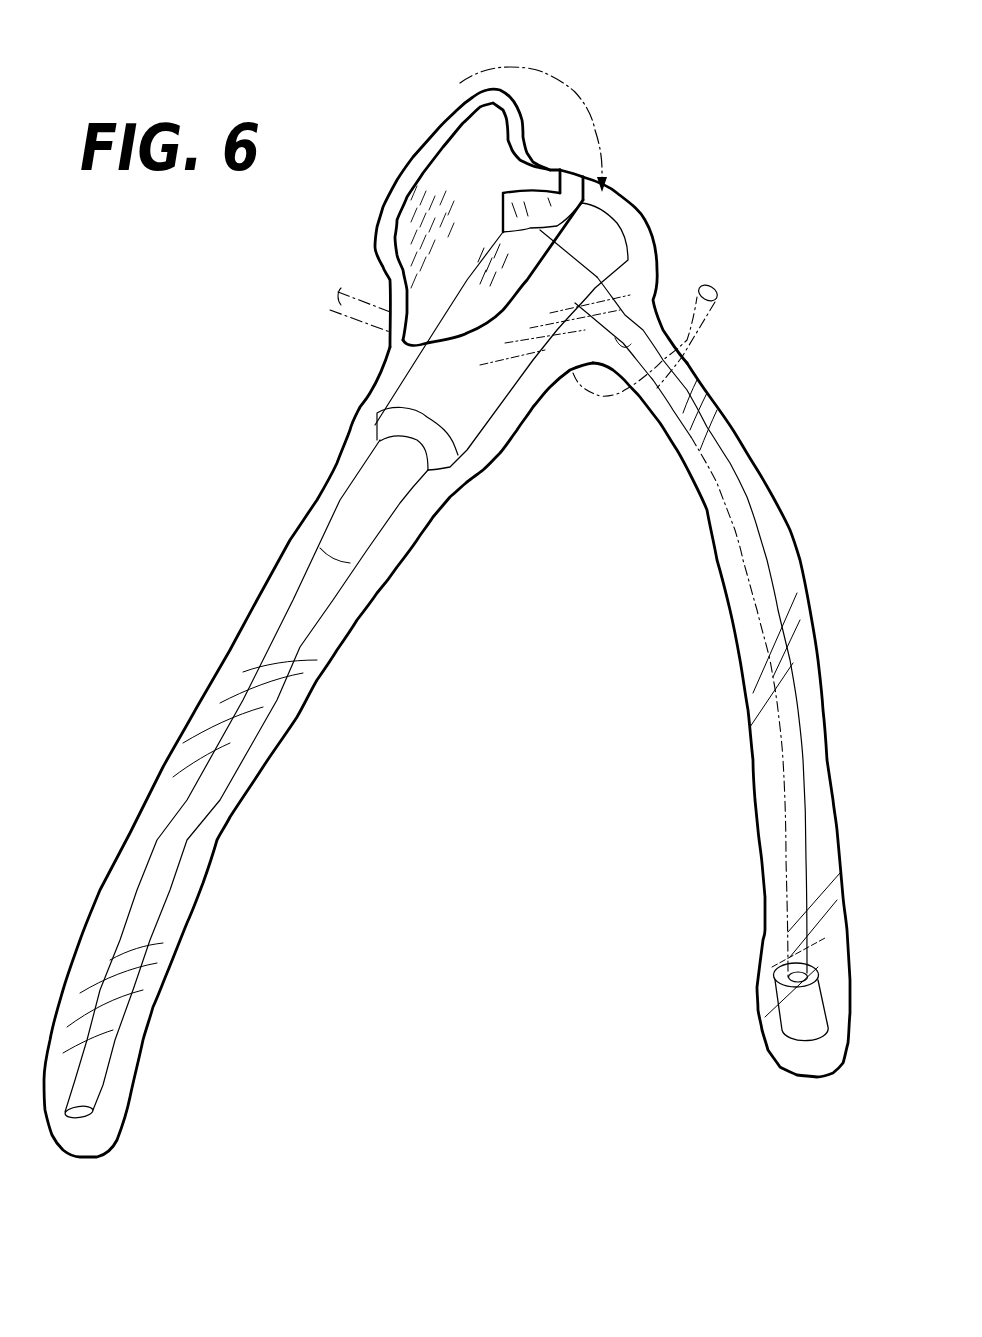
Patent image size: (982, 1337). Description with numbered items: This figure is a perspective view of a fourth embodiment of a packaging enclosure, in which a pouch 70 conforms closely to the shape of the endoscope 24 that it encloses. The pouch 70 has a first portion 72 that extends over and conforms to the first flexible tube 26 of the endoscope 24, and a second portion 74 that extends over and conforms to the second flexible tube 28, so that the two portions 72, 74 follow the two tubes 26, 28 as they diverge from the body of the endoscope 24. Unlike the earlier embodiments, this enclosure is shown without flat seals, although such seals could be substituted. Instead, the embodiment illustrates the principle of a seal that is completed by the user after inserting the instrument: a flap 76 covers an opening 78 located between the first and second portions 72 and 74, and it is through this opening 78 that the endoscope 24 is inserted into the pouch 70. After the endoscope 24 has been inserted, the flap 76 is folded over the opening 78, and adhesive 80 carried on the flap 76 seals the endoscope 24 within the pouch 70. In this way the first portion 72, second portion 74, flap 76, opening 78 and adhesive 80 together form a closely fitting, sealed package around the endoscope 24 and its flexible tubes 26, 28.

The endoscope 24 is at (470, 417).
The first flexible tube 26 is at (150, 873).
The second tube 28 is at (790, 708).
The pouch 70 is at (346, 700).
The first portion 72 is at (177, 933).
The second portion 74 is at (787, 573).
The flap 76 is at (449, 220).
The opening 78 is at (560, 193).
The adhesive 80 is at (436, 141).